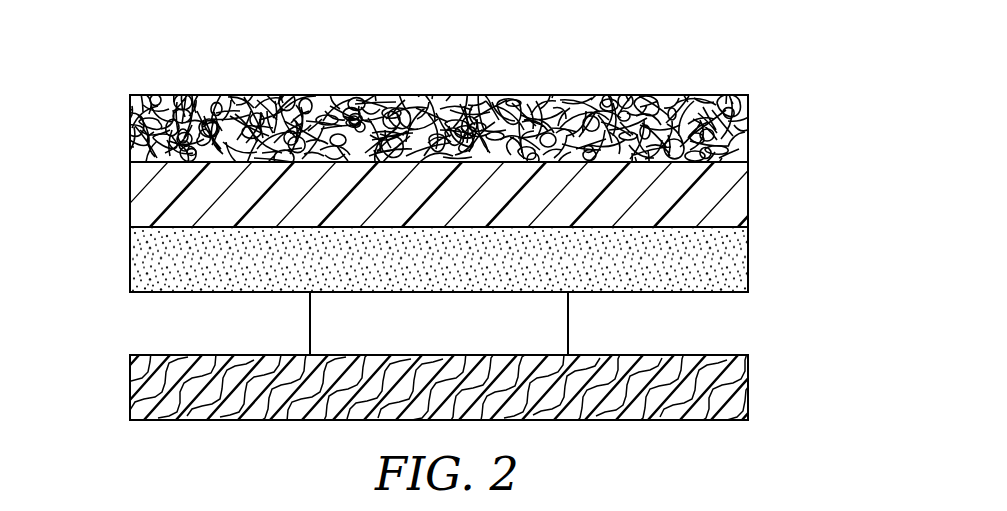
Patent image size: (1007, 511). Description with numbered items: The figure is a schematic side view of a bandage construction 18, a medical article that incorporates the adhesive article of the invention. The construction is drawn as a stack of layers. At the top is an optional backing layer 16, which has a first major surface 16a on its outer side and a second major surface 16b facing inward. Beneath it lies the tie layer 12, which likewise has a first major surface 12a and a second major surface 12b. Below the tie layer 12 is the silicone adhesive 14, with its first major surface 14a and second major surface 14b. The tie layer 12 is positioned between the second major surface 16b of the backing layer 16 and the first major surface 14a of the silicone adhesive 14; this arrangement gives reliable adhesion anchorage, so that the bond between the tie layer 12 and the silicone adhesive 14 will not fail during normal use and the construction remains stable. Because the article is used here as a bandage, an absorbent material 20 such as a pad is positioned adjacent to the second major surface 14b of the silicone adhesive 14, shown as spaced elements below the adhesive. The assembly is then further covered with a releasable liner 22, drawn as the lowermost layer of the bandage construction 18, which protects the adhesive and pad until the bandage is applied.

The bandage construction 18 is at (652, 53).
The backing layer 16 is at (738, 136).
The first major surface of the backing layer 16a is at (712, 105).
The second major surface of the backing layer 16b is at (722, 170).
The tie layer 12 is at (727, 198).
The first major surface of the tie layer 12a is at (137, 150).
The second major surface of the tie layer 12b is at (157, 228).
The silicone adhesive 14 is at (727, 262).
The first major surface of the silicone adhesive 14a is at (748, 226).
The second major surface of the silicone adhesive 14b is at (717, 292).
The absorbent material 20 is at (547, 320).
The releasable liner 22 is at (727, 382).